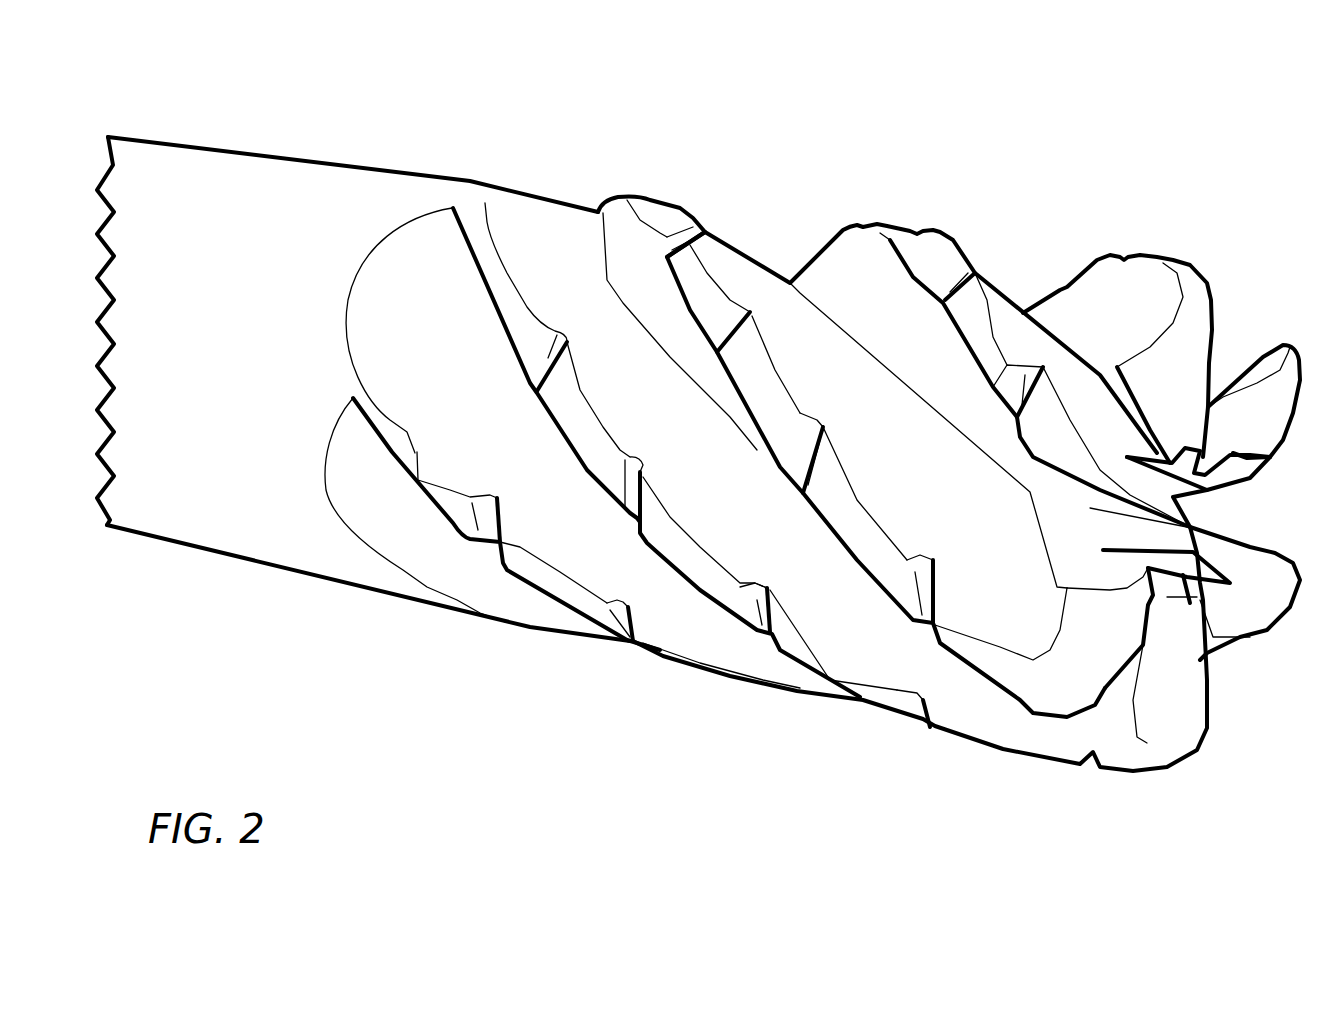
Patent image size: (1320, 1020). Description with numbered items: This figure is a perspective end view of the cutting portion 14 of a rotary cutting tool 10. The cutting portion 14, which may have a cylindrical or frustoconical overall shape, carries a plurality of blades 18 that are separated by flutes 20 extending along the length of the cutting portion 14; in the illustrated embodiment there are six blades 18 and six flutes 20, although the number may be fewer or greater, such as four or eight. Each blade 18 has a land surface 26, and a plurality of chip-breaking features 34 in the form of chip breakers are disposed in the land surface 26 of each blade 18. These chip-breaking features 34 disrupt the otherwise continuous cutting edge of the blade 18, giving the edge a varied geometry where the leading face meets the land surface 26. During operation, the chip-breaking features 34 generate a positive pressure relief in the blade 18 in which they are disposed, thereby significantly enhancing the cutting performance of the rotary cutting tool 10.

The rotary cutting tool 10 is at (1276, 112).
The cutting portion 14 is at (828, 722).
The blades 18 is at (491, 282).
The flutes 20 is at (403, 307).
The land surface 26 is at (1010, 360).
The chip-breaking features 34 is at (970, 320).